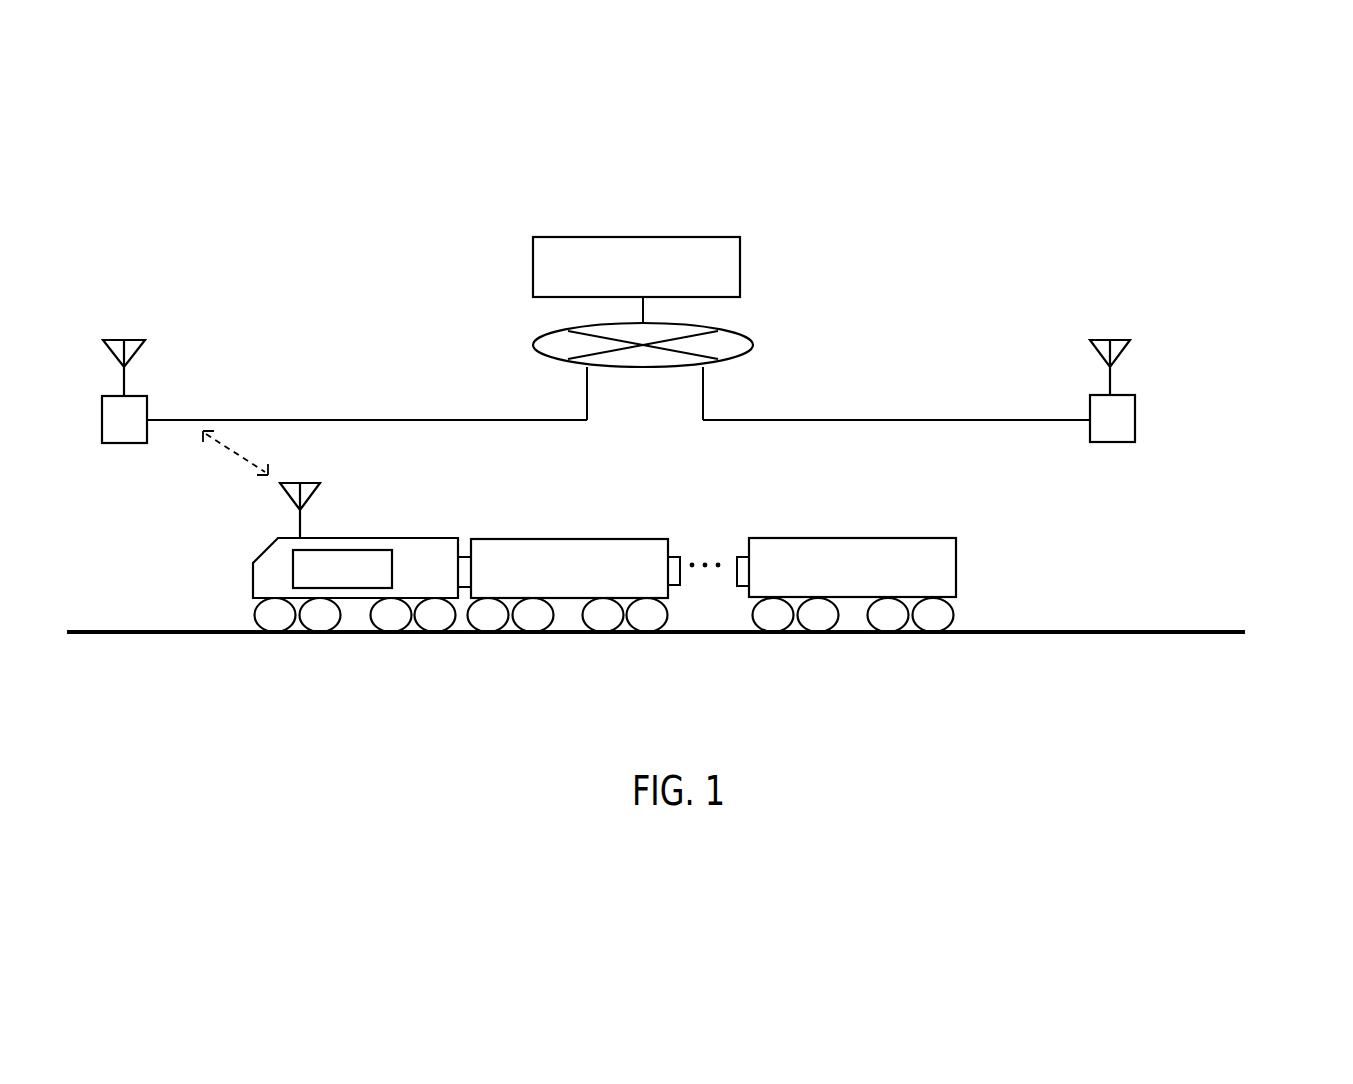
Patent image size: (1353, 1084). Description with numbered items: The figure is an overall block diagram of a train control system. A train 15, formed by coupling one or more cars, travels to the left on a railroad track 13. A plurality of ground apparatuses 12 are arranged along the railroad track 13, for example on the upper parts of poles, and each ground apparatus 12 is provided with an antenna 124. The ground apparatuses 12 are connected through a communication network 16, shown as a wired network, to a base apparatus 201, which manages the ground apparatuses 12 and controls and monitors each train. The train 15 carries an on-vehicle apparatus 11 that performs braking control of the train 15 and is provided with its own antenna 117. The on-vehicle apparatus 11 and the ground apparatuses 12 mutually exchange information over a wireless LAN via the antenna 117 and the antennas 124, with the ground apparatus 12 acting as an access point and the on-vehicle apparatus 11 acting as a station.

The base apparatus 201 is at (642, 236).
The communication network 16 is at (748, 334).
The antenna 124 is at (133, 336).
The ground apparatus 12 is at (148, 405).
The train 15 is at (968, 521).
The antenna 117 is at (305, 480).
The on-vehicle apparatus 11 is at (357, 548).
The railroad track 13 is at (1210, 630).